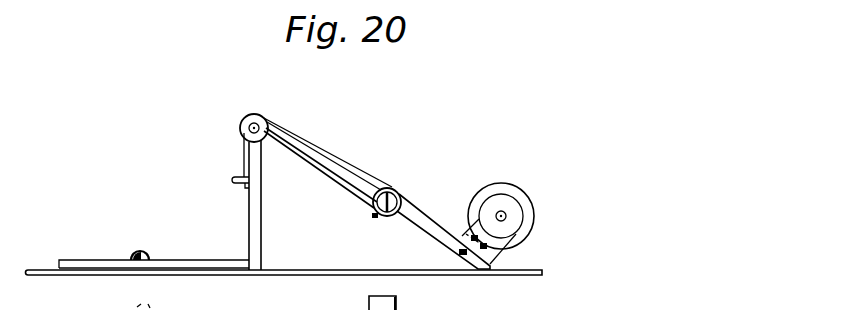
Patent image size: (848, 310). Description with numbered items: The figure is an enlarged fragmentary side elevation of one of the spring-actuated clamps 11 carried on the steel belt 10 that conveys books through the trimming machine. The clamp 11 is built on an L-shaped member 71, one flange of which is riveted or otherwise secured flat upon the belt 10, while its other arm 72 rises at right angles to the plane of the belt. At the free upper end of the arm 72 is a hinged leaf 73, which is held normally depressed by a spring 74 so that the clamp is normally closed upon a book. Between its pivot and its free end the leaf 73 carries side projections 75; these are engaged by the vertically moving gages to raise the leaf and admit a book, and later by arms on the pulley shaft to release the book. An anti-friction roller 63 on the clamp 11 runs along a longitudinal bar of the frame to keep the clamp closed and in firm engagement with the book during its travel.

The steel belt 10 is at (312, 276).
The spring actuated clamp 11 is at (439, 231).
The anti-friction roller 63 is at (523, 198).
The L-shaped member 71 is at (172, 259).
The arm 72 is at (262, 211).
The hinged leaf 73 is at (349, 176).
The spring 74 is at (266, 122).
The side projections 75 is at (400, 193).